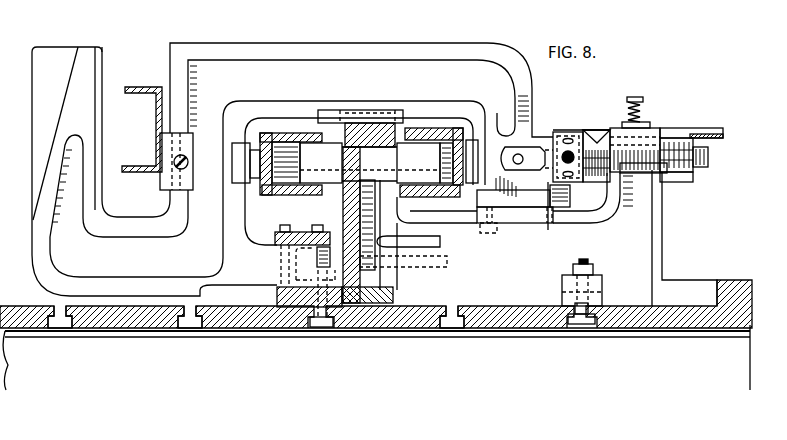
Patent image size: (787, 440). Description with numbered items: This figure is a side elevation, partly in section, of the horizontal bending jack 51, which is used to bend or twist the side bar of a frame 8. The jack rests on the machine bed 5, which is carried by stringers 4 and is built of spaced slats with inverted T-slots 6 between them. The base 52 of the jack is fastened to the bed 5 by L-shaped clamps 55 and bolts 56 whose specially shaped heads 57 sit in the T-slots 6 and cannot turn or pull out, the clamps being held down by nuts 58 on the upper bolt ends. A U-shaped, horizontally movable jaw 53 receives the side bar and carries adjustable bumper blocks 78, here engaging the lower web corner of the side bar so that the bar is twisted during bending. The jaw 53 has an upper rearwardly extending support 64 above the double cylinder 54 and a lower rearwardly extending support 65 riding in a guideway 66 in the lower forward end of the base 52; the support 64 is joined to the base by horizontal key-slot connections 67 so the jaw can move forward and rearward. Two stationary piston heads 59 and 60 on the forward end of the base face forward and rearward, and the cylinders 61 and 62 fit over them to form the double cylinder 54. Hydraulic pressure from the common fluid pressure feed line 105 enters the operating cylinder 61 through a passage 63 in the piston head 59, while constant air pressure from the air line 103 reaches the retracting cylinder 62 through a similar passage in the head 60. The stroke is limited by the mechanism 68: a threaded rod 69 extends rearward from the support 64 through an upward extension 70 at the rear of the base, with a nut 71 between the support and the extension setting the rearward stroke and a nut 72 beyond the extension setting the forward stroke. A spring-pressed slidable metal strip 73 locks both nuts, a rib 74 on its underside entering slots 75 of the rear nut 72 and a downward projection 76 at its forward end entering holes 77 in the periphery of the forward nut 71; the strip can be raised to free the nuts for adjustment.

The stringers 4 is at (751, 366).
The machine bed 5 is at (43, 302).
The inverted T-slots 6 is at (65, 331).
The frame 8 is at (143, 86).
The horizontal bending jack 51 is at (560, 101).
The base 52 is at (663, 264).
The horizontally movable jaw 53 is at (47, 164).
The double cylinder 54 is at (302, 196).
The L-shaped clamps 55 is at (563, 274).
The bolts 56 is at (582, 258).
The specially shaped heads 57 is at (322, 328).
The nuts 58 is at (594, 267).
The stationary piston head 59 is at (321, 163).
The stationary piston head 60 is at (418, 163).
The cylinder 61 is at (289, 132).
The cylinder 62 is at (428, 127).
The passage 63 is at (343, 171).
The upper rearwardly extending support 64 is at (408, 45).
The lower rearwardly extending support 65 is at (270, 245).
The guideway 66 is at (358, 263).
The key-slot connections 67 is at (514, 224).
The stroke-limiting mechanism 68 is at (672, 111).
The threaded rod 69 is at (605, 178).
The upward extension 70 is at (663, 201).
The nut 71 is at (592, 128).
The nut 72 is at (695, 181).
The slidable metal strip 73 is at (706, 126).
The rib 74 is at (724, 139).
The slots 75 is at (688, 185).
The downward projection 76 is at (566, 130).
The holes 77 is at (552, 180).
The adjustable bumper blocks 78 is at (165, 184).
The air line 103 is at (441, 244).
The common fluid pressure feed line 105 is at (415, 273).